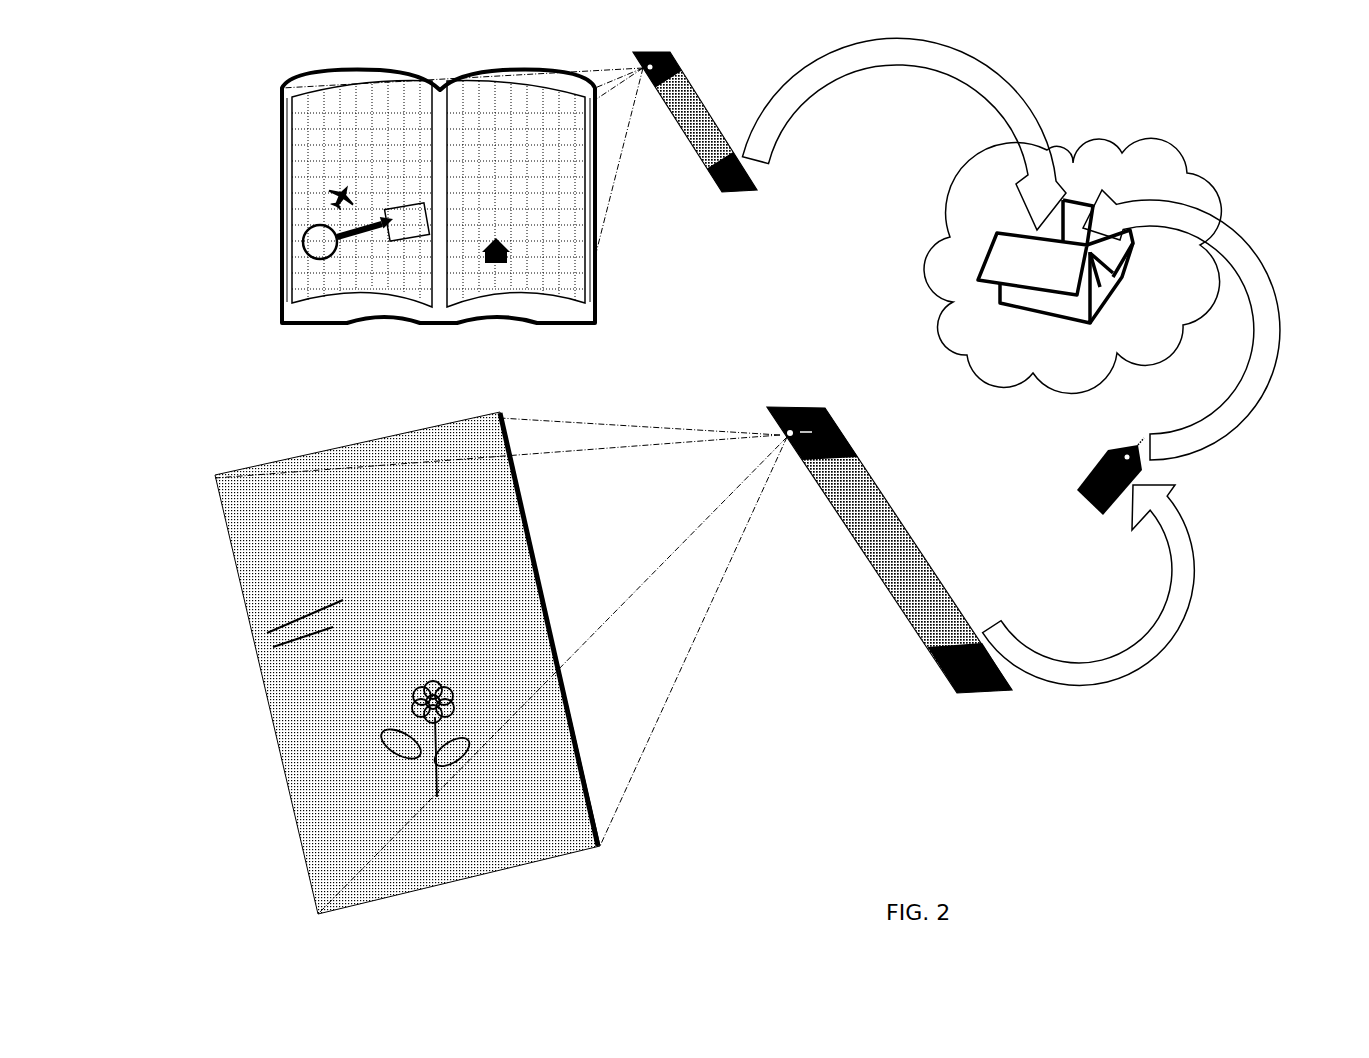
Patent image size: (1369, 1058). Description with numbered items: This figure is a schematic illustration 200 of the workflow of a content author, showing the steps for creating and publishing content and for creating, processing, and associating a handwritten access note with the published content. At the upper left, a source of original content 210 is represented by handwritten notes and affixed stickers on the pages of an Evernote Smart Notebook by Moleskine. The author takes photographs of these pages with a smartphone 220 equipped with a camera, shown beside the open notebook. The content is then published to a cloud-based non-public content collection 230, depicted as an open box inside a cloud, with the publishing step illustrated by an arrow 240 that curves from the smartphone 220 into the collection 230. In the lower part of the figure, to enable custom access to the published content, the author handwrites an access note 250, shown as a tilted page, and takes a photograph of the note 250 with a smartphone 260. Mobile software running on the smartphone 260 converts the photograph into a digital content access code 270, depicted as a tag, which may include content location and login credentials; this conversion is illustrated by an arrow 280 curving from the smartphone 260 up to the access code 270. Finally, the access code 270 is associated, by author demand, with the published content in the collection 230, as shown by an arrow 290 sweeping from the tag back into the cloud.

The schematic illustration 200 is at (153, 146).
The source of original content 210 is at (275, 262).
The smartphone 220 is at (707, 175).
The cloud-based non-public content collection 230 is at (972, 262).
The arrow 240 is at (905, 72).
The access note 250 is at (252, 673).
The smartphone 260 is at (868, 575).
The digital content access code 270 is at (1077, 483).
The arrow 280 is at (1148, 622).
The arrow 290 is at (1262, 388).